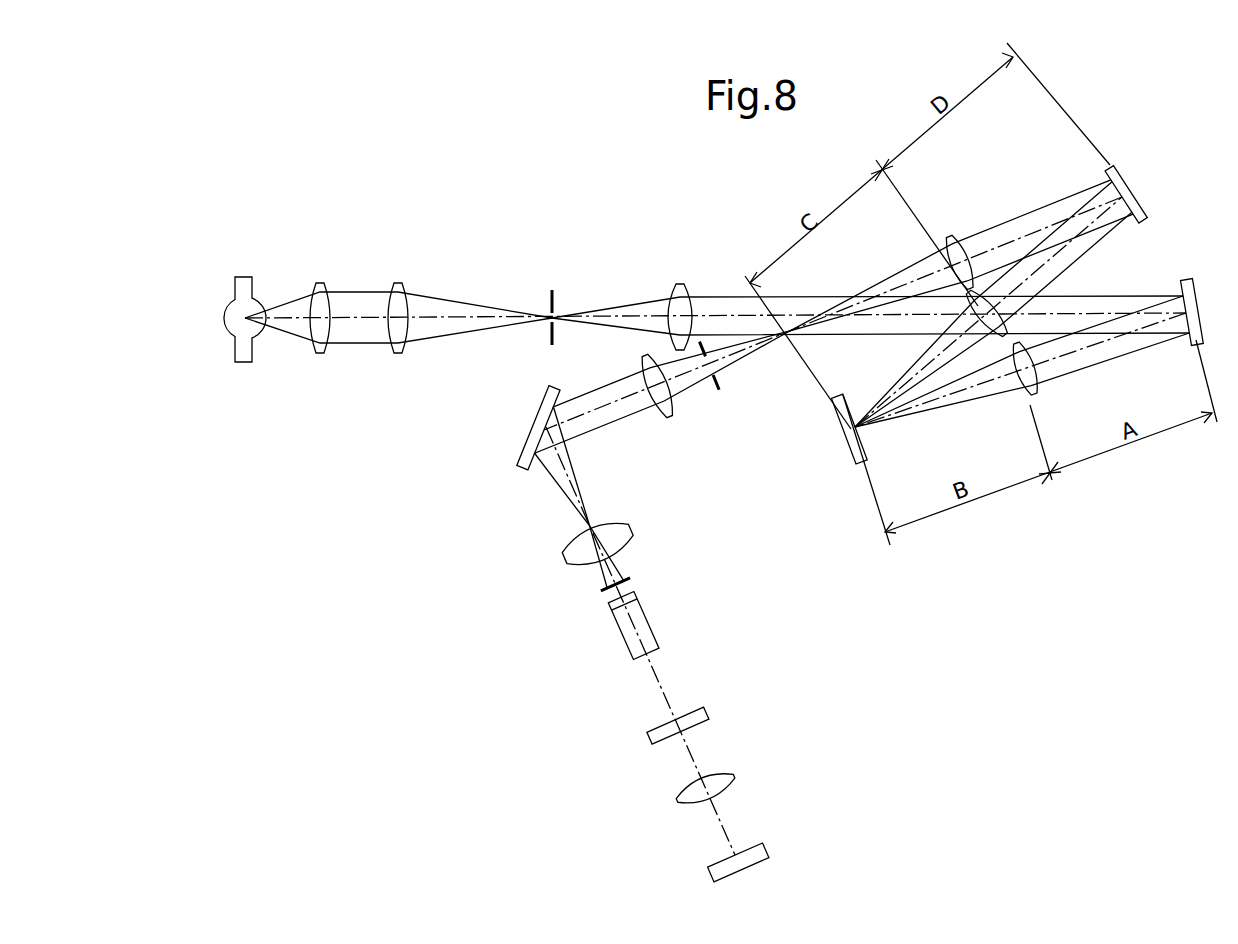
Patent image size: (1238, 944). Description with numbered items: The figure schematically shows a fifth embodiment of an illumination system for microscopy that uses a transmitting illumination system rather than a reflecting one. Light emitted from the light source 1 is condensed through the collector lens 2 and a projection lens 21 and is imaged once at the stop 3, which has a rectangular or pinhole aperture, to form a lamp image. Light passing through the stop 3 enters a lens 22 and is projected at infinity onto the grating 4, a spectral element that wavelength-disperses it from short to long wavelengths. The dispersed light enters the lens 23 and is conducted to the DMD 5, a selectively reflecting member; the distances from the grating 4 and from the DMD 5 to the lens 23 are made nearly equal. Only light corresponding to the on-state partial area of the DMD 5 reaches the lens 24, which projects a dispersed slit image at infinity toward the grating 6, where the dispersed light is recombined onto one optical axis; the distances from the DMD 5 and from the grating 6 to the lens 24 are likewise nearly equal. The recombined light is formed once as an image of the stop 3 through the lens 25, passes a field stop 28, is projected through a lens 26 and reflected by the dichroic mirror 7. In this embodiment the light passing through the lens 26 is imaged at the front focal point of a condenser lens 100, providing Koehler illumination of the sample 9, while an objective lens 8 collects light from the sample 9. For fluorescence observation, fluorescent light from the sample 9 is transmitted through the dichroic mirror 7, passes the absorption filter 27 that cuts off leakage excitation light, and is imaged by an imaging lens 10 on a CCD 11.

The light source 1 is at (246, 285).
The collector lens 2 is at (320, 300).
The projection lens 21 is at (400, 298).
The stop 3 is at (555, 293).
The lens 22 is at (682, 296).
The grating 4 is at (1180, 283).
The lens 23 is at (1017, 400).
The DMD 5 is at (848, 458).
The lens 24 is at (1003, 320).
The grating 6 is at (1121, 190).
The lens 25 is at (960, 247).
The field stop 28 is at (720, 392).
The lens 26 is at (658, 416).
The dichroic mirror 7 is at (540, 420).
The condenser lens 100 is at (570, 540).
The sample 9 is at (602, 588).
The objective lens 8 is at (622, 633).
The absorption filter 27 is at (688, 713).
The imaging lens 10 is at (720, 777).
The CCD 11 is at (750, 850).